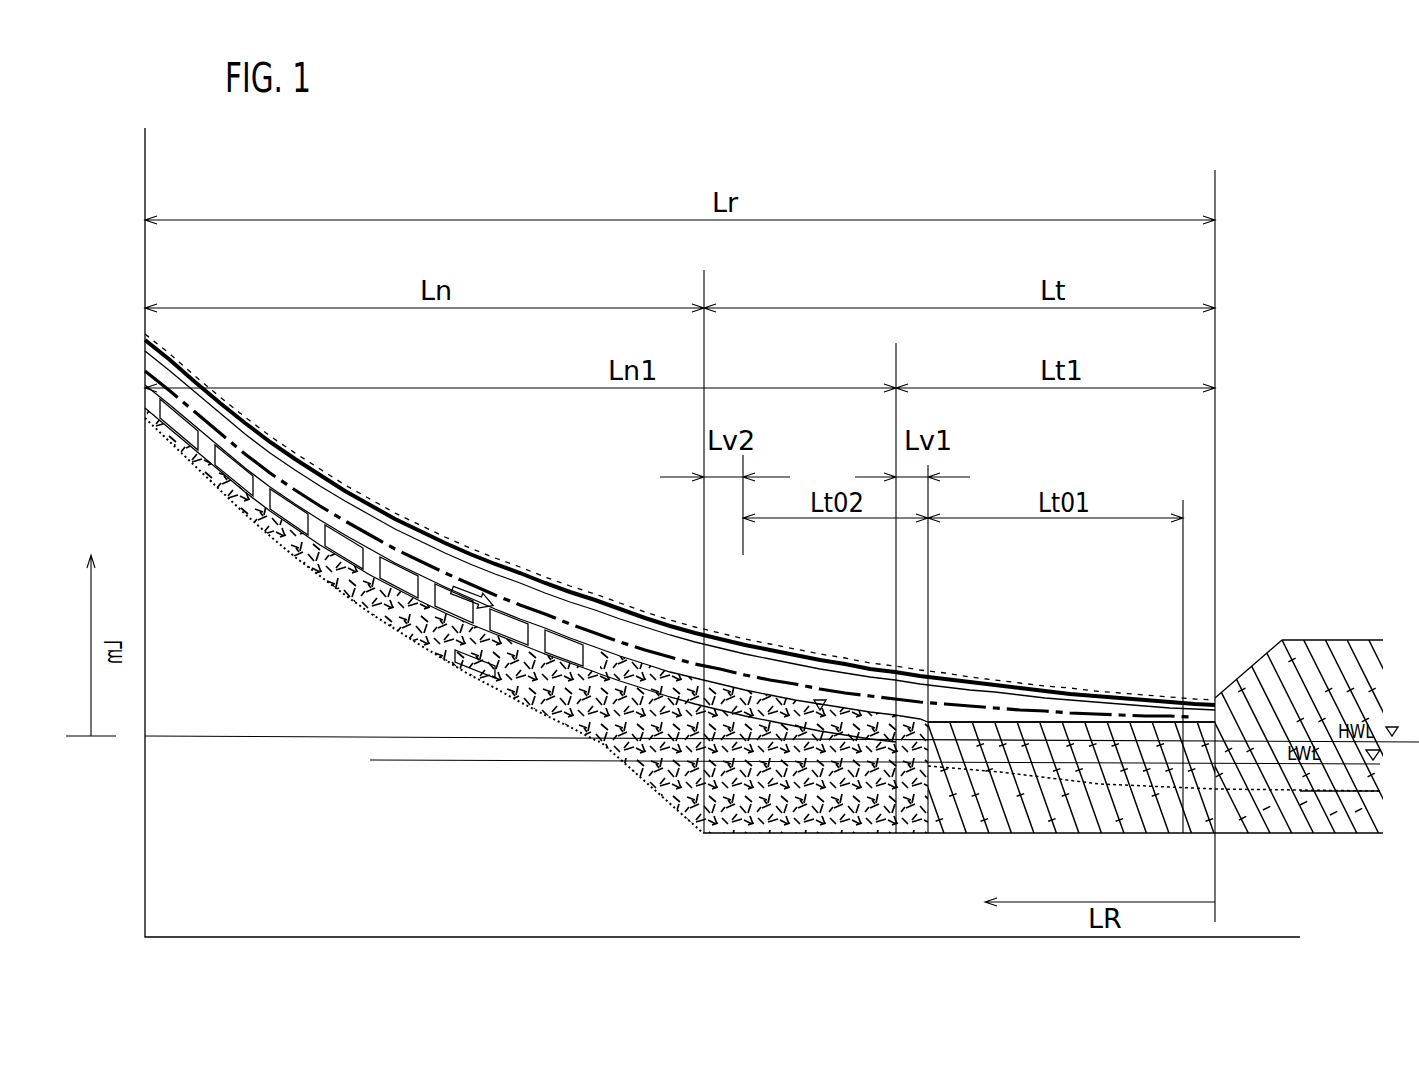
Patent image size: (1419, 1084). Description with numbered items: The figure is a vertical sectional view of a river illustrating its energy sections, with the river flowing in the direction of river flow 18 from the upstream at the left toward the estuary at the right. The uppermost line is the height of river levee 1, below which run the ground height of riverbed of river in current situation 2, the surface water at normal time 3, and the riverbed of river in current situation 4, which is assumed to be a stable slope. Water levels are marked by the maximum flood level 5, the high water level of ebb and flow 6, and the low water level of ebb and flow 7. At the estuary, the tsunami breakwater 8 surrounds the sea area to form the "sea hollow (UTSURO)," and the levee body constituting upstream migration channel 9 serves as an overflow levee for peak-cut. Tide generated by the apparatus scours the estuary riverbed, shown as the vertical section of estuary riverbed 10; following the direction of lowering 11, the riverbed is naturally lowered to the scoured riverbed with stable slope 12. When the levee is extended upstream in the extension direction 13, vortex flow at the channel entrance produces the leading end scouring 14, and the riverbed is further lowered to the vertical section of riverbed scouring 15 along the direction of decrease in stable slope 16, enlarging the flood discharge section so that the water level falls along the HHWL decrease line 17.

The height of river levee 1 is at (292, 457).
The ground height of riverbed of river in current situation 2 is at (318, 484).
The surface water at normal time 3 is at (332, 526).
The riverbed of river in current situation 4 is at (372, 562).
The maximum flood level 5 is at (470, 540).
The high water level of ebb and flow 6 is at (1250, 748).
The low water level of ebb and flow 7 is at (1275, 795).
The tsunami breakwater 8 is at (1330, 690).
The levee body constituting upstream migration channel 9 is at (1043, 717).
The vertical section of estuary riverbed scoured by tide generation apparatus 10 is at (1085, 833).
The direction of lowering of riverbed of scoured riverbed at estuary 11 is at (658, 705).
The scoured riverbed with stable slope 12 is at (538, 684).
The extension direction of levee body constituting upstream migration channel 13 is at (783, 777).
The leading end scouring by vortex flow 14 is at (725, 802).
The vertical section of riverbed scouring with decrease in stable slope 15 is at (675, 800).
The direction of decrease in stable slope at upstream of river 16 is at (473, 685).
The HHWL decrease line 17 is at (548, 615).
The direction of river flow 18 is at (482, 595).